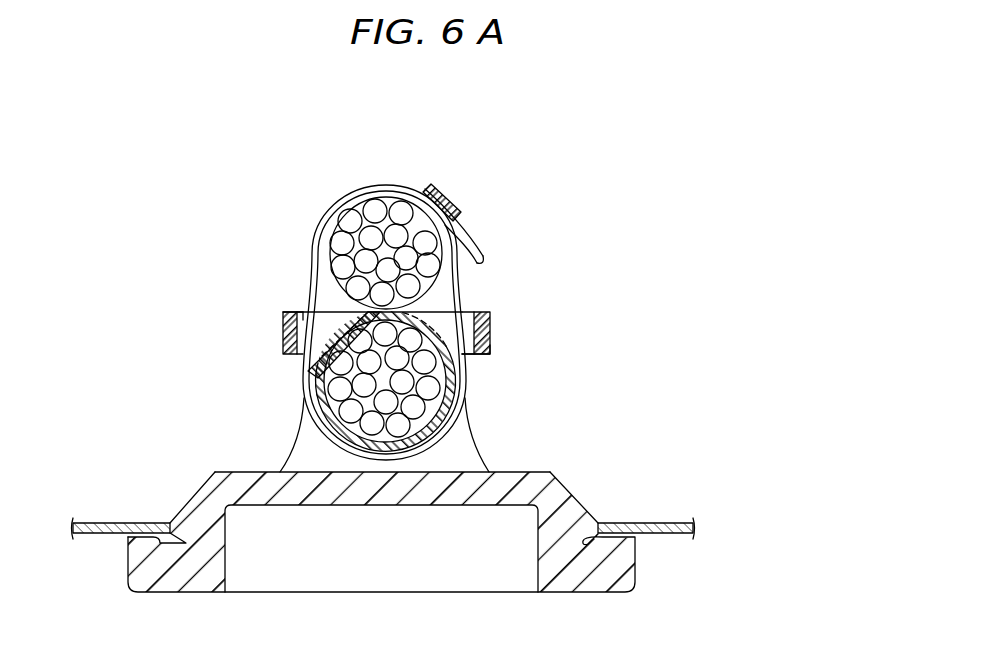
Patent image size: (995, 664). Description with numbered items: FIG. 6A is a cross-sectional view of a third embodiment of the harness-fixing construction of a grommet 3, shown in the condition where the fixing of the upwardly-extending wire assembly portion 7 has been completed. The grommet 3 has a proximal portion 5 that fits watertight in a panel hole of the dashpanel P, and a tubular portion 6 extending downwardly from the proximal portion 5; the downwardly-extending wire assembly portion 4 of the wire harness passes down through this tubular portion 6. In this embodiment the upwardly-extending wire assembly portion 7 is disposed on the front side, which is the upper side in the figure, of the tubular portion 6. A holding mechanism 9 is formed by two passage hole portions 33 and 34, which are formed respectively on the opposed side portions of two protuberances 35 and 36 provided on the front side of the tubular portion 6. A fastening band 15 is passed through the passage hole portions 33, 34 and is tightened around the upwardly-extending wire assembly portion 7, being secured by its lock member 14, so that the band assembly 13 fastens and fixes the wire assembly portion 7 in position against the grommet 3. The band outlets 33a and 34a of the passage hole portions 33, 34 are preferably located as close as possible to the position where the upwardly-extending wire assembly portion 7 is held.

The grommet 3 is at (590, 505).
The dashpanel P is at (684, 537).
The downwardly-extending wire assembly portion 4 is at (330, 431).
The proximal portion 5 is at (536, 472).
The tubular portion 6 is at (430, 443).
The upwardly-extending wire assembly portion 7 is at (333, 220).
The holding mechanism 9 is at (388, 339).
The binding band assembly 13 is at (457, 177).
The lock member 14 is at (476, 188).
The fastening band 15 is at (382, 186).
The passage hole portion 33 is at (490, 326).
The band outlet 33a is at (478, 356).
The passage hole portion 34 is at (283, 344).
The band outlet 34a is at (301, 312).
The protuberance 35 is at (440, 300).
The protuberance 36 is at (323, 283).